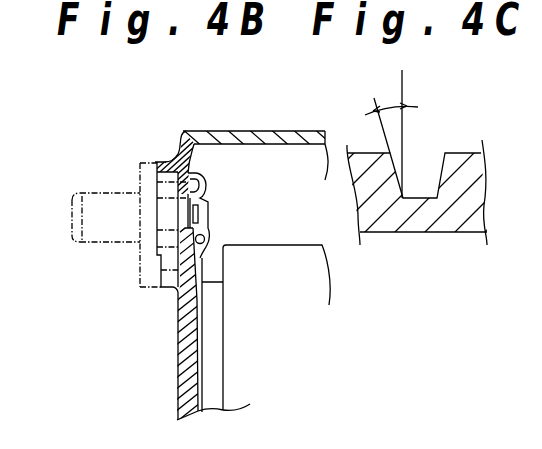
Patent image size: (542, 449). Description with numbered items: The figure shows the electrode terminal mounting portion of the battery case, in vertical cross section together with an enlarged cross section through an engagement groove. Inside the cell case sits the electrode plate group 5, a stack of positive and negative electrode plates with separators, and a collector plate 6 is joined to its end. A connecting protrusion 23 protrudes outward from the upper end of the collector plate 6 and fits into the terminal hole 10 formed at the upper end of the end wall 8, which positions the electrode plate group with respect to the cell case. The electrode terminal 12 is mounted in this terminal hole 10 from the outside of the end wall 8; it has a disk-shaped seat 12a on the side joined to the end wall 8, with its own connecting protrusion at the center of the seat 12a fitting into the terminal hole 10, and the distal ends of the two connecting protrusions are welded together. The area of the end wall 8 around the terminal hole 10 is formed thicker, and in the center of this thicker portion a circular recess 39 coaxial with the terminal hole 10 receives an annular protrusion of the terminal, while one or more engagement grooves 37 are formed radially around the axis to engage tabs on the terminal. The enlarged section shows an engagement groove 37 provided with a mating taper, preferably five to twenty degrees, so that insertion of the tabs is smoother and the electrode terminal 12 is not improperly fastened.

In FIG. 4B, the electrode plate group 5 is at (288, 339).
In FIG. 4B, the collector plate 6 is at (202, 362).
In FIG. 4B, the end wall 8 is at (182, 327).
In FIG. 4B, the terminal hole 10 is at (180, 206).
In FIG. 4B, the electrode terminal 12 is at (135, 193).
In FIG. 4B, the disk-shaped seat 12a is at (140, 178).
In FIG. 4B, the connecting protrusion 23 is at (180, 207).
In FIG. 4B, the engagement groove 37 is at (157, 287).
In FIG. 4C, the engagement groove 37 is at (439, 183).
In FIG. 4B, the circular recess 39 is at (160, 244).